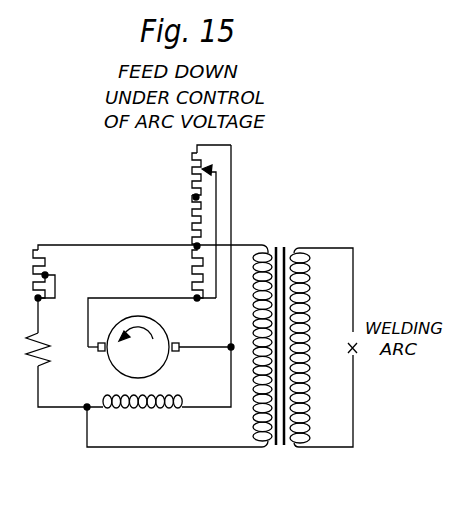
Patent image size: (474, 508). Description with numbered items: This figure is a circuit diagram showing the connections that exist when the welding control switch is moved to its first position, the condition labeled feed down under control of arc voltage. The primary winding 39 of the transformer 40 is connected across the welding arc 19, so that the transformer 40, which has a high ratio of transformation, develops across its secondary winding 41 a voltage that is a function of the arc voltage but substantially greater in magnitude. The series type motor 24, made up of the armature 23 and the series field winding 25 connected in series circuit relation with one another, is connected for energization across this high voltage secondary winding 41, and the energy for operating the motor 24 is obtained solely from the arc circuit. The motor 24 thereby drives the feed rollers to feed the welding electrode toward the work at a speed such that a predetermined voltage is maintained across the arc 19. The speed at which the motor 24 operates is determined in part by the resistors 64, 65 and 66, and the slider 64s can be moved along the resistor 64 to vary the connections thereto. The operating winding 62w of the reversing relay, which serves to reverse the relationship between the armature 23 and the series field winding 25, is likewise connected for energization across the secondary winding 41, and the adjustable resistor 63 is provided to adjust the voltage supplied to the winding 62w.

The resistor 64 is at (205, 158).
The slider 64s is at (212, 171).
The resistor 65 is at (192, 215).
The resistor 66 is at (192, 269).
The adjustable resistor 63 is at (46, 262).
The winding 62w is at (43, 344).
The series type motor 24 is at (110, 294).
The armature 23 is at (157, 366).
The series field winding 25 is at (147, 410).
The secondary winding 41 is at (252, 318).
The transformer 40 is at (285, 240).
The primary winding 39 is at (306, 290).
The arc 19 is at (346, 348).